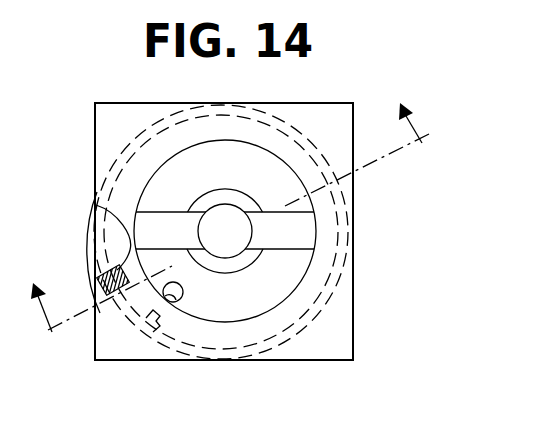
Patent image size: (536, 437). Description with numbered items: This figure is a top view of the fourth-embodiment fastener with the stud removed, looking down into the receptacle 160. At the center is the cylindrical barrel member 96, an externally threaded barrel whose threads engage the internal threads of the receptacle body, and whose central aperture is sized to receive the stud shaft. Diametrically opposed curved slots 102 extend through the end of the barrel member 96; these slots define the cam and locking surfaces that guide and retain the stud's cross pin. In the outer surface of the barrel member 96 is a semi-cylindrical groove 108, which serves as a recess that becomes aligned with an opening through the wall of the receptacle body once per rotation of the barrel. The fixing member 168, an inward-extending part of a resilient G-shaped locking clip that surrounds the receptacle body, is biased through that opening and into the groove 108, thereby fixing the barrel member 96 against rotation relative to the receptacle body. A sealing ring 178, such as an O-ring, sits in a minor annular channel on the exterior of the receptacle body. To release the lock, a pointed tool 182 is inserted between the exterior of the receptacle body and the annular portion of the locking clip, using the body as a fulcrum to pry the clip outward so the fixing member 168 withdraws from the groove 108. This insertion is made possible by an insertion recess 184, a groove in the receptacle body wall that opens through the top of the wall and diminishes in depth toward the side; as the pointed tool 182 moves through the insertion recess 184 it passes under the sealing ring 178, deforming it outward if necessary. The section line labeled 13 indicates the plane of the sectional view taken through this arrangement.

The section line 13- 13 is at (223, 206).
The barrel member 96 is at (296, 203).
The curved slots 102 is at (305, 240).
The groove 108 is at (190, 295).
The receptacle 160 is at (358, 341).
The fixing member 168 is at (160, 336).
The sealing ring 178 is at (86, 237).
The pointed tool 182 is at (100, 279).
The insertion recess 184 is at (107, 203).